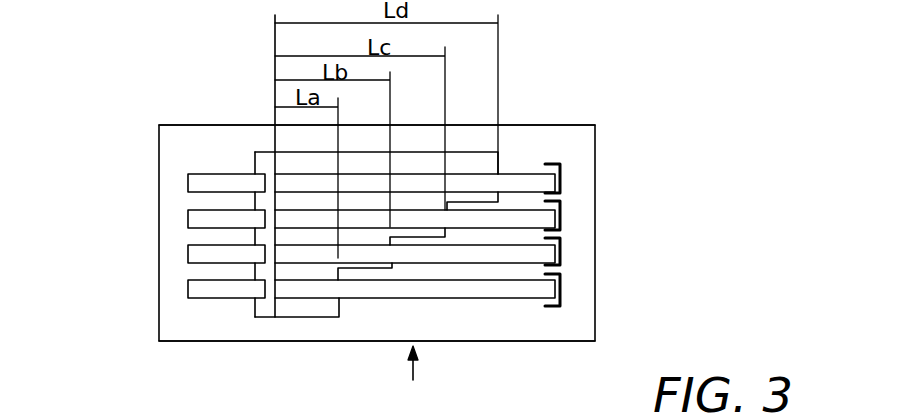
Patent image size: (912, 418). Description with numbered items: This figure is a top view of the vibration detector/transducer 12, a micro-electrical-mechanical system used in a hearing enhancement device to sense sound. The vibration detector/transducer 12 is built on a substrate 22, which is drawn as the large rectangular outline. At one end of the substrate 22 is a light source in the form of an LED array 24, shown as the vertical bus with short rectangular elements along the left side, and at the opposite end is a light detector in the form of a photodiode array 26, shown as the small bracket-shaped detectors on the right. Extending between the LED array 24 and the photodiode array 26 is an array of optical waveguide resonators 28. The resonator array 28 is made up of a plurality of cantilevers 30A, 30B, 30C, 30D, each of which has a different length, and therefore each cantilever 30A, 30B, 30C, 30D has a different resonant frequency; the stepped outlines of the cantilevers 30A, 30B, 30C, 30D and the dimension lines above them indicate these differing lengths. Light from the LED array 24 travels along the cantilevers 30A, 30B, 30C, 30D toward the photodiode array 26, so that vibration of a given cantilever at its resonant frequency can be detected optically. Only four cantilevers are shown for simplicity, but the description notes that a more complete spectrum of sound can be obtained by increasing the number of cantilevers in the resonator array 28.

The vibration detector/transducer 12 is at (142, 253).
The substrate 22 is at (480, 318).
The LED array 24 is at (190, 138).
The photodiode array 26 is at (561, 162).
The array of optical waveguide resonators 28 is at (413, 382).
The cantilever 30A is at (563, 183).
The cantilever 30B is at (563, 218).
The cantilever 30C is at (563, 251).
The cantilever 30D is at (563, 293).